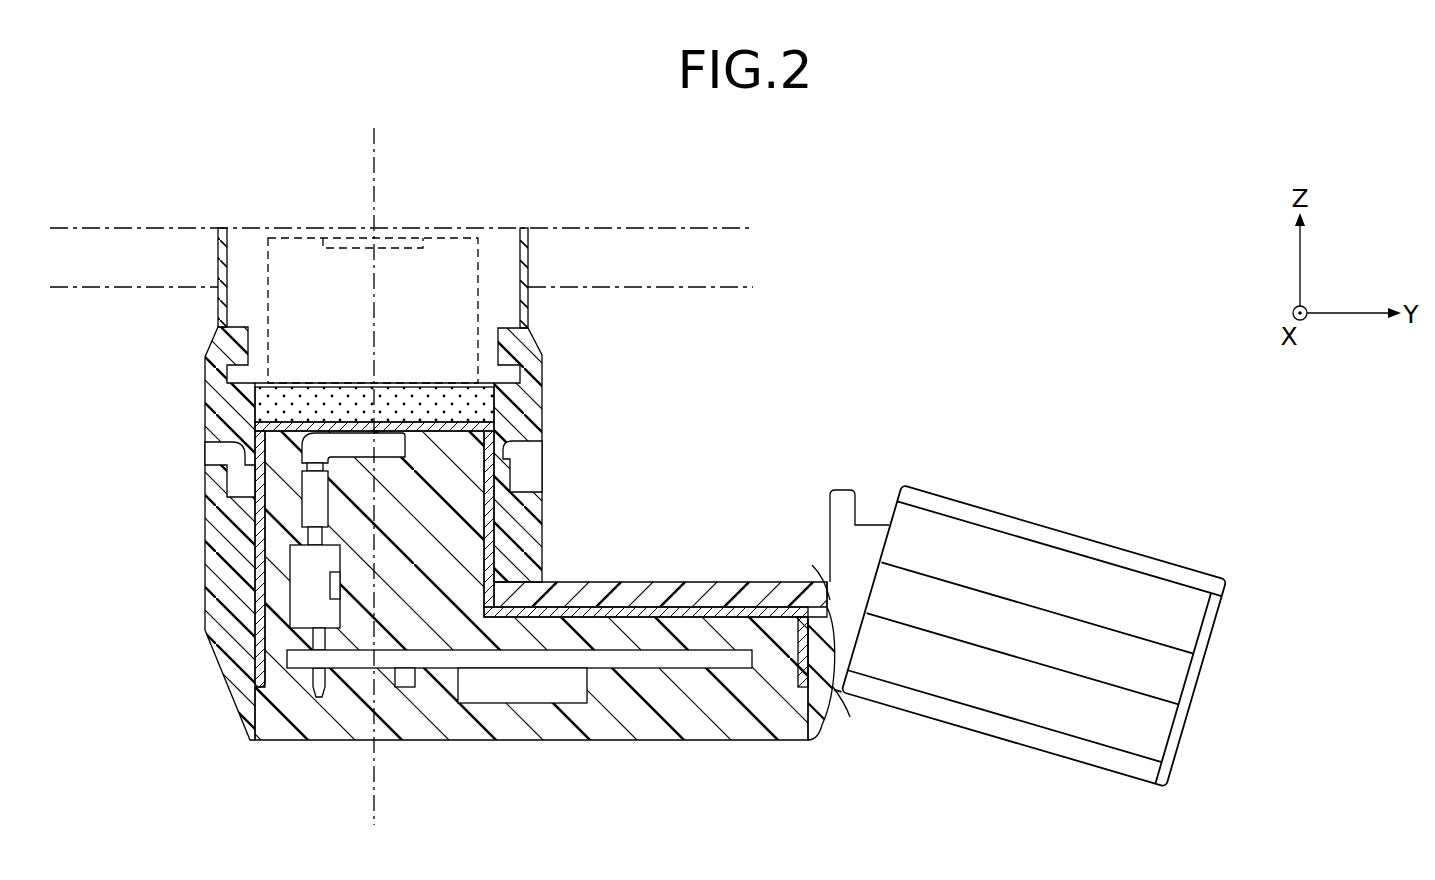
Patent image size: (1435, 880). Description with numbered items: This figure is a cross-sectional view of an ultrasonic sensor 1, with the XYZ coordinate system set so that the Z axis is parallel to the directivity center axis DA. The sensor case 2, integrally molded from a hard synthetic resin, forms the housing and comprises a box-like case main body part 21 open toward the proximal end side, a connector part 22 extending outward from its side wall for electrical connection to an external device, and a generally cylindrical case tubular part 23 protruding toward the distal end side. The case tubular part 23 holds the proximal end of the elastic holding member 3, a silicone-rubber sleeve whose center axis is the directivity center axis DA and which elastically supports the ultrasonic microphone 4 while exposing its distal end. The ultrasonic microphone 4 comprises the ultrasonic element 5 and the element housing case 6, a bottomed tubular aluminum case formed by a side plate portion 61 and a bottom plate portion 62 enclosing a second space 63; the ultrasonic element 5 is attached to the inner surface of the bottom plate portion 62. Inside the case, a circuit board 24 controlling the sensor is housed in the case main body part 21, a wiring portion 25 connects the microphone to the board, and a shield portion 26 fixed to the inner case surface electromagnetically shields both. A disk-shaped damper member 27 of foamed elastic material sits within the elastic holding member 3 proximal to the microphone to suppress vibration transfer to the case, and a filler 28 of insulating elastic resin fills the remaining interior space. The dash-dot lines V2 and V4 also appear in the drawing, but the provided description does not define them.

The ultrasonic sensor 1 is at (1062, 257).
The sensor case 2 is at (520, 559).
The elastic holding member 3 is at (528, 352).
The ultrasonic microphone 4 is at (524, 226).
The ultrasonic element 5 is at (355, 246).
The element housing case 6 is at (448, 263).
The side plate portion 61 is at (508, 263).
The bottom plate portion 62 is at (290, 236).
The second space 63 is at (447, 263).
The case main body part 21 is at (755, 593).
The connector part 22 is at (1070, 545).
The case tubular part 23 is at (532, 498).
The circuit board 24 is at (738, 660).
The wiring portion 25 is at (297, 563).
The shield portion 26 is at (652, 611).
The damper member 27 is at (498, 398).
The filler 28 is at (693, 725).
The virtual plane V2 is at (730, 238).
The virtual plane V4 is at (218, 228).
The directivity center axis DA is at (372, 812).